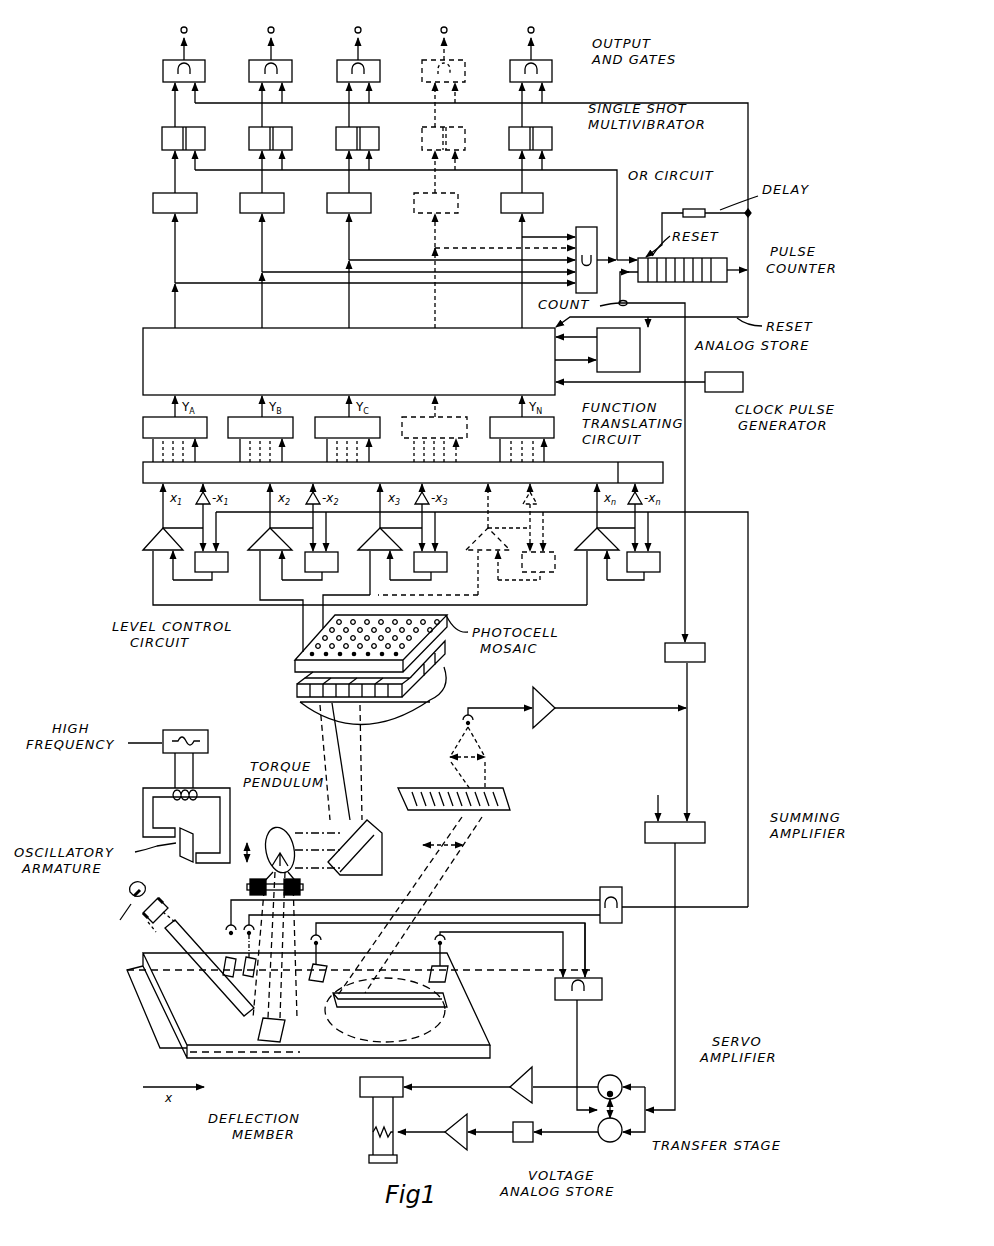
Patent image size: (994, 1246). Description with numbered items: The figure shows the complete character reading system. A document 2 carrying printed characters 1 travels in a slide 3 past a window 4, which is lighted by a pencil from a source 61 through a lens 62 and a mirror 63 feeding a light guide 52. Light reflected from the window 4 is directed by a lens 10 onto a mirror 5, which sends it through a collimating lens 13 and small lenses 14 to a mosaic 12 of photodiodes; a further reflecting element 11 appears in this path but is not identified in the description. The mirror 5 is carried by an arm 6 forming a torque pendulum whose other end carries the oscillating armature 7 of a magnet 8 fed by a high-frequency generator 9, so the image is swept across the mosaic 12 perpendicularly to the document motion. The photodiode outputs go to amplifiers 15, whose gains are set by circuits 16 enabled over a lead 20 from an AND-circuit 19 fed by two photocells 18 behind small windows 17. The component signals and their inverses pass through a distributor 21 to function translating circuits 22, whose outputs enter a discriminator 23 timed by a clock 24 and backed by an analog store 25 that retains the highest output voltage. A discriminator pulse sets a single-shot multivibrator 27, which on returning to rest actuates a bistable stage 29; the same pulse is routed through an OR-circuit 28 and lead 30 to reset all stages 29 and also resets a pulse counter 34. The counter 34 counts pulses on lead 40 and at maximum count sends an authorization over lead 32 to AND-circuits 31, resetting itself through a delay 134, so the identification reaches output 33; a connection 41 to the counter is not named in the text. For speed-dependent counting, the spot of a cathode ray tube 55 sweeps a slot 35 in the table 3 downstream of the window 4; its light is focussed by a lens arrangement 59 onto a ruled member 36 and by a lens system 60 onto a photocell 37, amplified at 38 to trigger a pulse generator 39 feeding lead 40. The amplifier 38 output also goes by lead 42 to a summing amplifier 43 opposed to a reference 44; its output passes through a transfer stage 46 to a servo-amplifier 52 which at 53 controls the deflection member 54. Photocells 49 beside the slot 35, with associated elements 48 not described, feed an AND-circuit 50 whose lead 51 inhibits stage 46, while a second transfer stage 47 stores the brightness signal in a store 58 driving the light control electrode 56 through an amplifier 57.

The characters 1 is at (238, 1042).
The document 2 is at (162, 1036).
The slide 3 is at (468, 1025).
The window 4 is at (281, 1042).
The mirror 5 is at (272, 800).
The arm 6 is at (244, 843).
The oscillating armature 7 is at (183, 850).
The magnet 8 is at (186, 825).
The stabilized generator 9 is at (192, 759).
The lens 10 is at (303, 886).
The mirror prism 11 is at (366, 847).
The mosaic 12 is at (295, 662).
The collimating lens 13 is at (300, 716).
The light guiding small lenses 14 is at (298, 692).
The amplifiers 15 is at (373, 539).
The gain control circuits 16 is at (200, 612).
The small windows 17 is at (246, 956).
The photocells 18 is at (228, 918).
The AND-circuit 19 is at (674, 896).
The lead 20 is at (482, 709).
The distributor 21 is at (414, 472).
The function translating circuits 22 is at (583, 418).
The discriminator 23 is at (349, 361).
The clock circuit 24 is at (732, 406).
The analog store 25 is at (692, 345).
The single-shot multivibrator 27 is at (596, 135).
The OR-circuit 28 is at (641, 192).
The bistable stage 29 is at (368, 138).
The lead 30 is at (406, 206).
The AND-circuit 31 is at (591, 56).
The lead 32 is at (471, 210).
The identification output 33 is at (534, 29).
The pulse counter 34 is at (682, 259).
The elongated slot 35 is at (445, 998).
The ruled member 36 is at (466, 799).
The photocell 37 is at (497, 718).
The amplifier 38 is at (548, 702).
The pulse generator 39 is at (685, 652).
The lead 40 is at (653, 457).
The reset line 41 is at (652, 313).
The lead 42 is at (632, 742).
The summing amplifier 43 is at (767, 826).
The reference voltage input 44 is at (659, 801).
The transfer stage 46 is at (621, 1094).
The transfer stage 47 is at (657, 1146).
The reference marks 48 is at (326, 966).
The photocells 49 is at (439, 950).
The AND-circuit 50 is at (590, 989).
The output lead 51 is at (587, 1055).
The light guide 52 is at (215, 990).
The control connection 53 is at (457, 1081).
The deflection member 54 is at (381, 1087).
The cathode ray tube 55 is at (320, 1123).
The light control electrode 56 is at (371, 1132).
The amplifier 57 is at (432, 1141).
The store 58 is at (550, 1162).
The lens arrangement 59 is at (413, 906).
The lens system 60 is at (480, 758).
The source 61 is at (115, 921).
The lens 62 is at (166, 911).
The mirror 63 is at (140, 881).
The short delay 134 is at (698, 224).